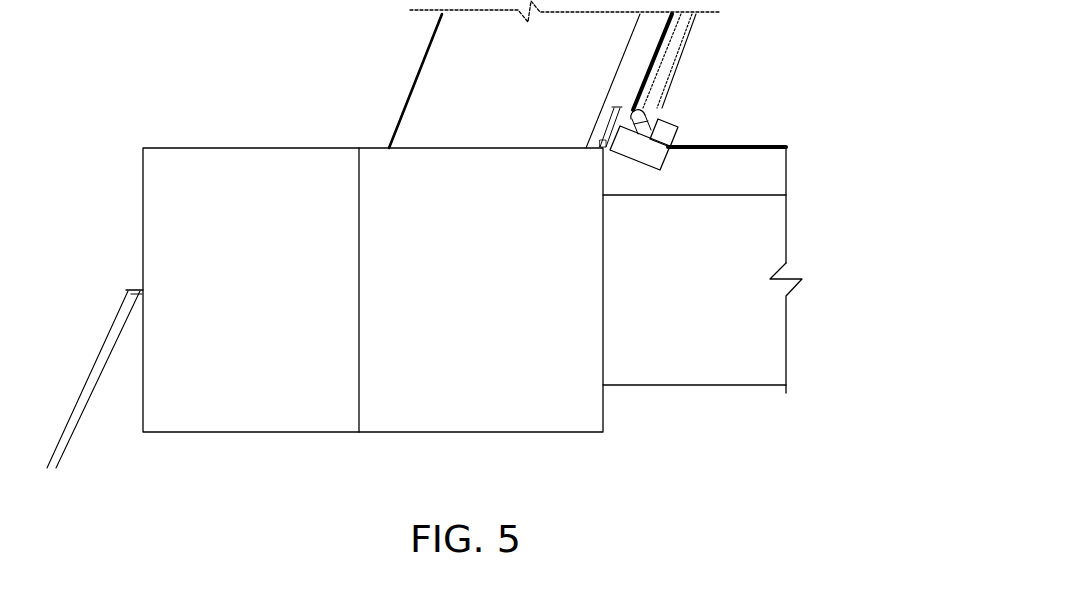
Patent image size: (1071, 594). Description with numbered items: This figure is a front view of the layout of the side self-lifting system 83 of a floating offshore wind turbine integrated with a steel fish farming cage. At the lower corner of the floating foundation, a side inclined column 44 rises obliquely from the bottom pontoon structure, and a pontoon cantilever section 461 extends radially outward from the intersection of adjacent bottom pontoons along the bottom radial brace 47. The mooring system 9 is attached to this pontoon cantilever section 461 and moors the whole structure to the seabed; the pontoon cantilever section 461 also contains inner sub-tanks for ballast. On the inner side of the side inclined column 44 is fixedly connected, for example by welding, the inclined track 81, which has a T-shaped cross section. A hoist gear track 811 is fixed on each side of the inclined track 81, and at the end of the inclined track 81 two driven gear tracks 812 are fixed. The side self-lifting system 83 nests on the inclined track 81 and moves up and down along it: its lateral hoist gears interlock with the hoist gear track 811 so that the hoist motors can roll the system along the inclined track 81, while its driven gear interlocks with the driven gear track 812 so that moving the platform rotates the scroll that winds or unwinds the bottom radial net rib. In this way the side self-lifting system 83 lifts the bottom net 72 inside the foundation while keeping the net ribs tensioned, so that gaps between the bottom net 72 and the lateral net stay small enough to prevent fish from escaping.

The mooring system 9 is at (85, 405).
The side inclined column 44 is at (397, 118).
The pontoon cantilever section 461 is at (305, 433).
The bottom radial brace 47 is at (706, 386).
The inclined track 81 is at (673, 55).
The hoist gear track 811 is at (698, 33).
The driven gear track 812 is at (668, 78).
The bottom net 72 is at (676, 131).
The side self-lifting system 83 is at (664, 158).